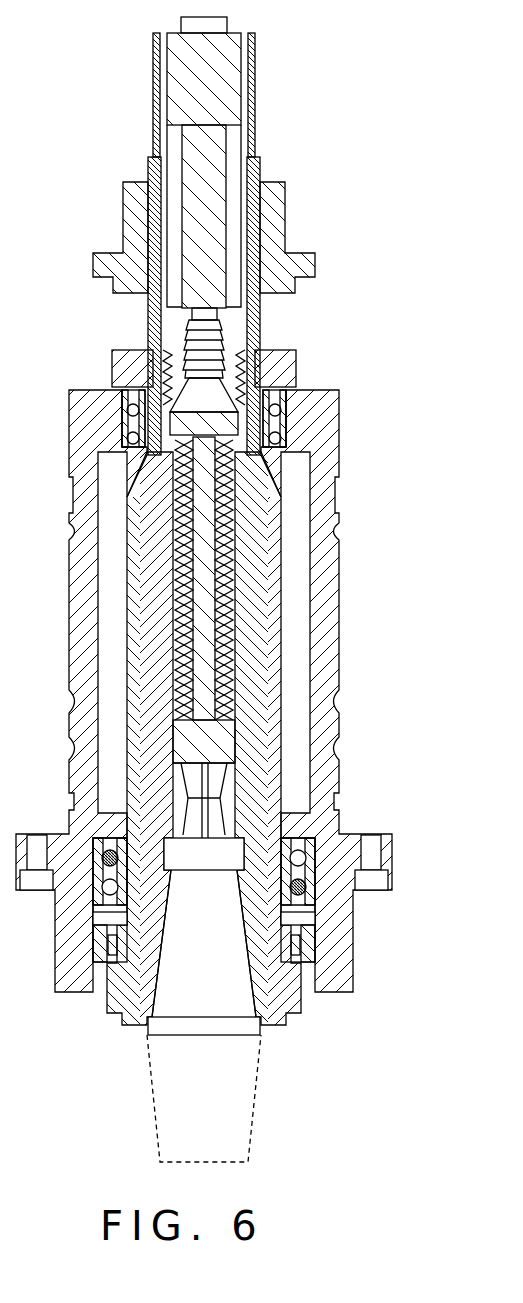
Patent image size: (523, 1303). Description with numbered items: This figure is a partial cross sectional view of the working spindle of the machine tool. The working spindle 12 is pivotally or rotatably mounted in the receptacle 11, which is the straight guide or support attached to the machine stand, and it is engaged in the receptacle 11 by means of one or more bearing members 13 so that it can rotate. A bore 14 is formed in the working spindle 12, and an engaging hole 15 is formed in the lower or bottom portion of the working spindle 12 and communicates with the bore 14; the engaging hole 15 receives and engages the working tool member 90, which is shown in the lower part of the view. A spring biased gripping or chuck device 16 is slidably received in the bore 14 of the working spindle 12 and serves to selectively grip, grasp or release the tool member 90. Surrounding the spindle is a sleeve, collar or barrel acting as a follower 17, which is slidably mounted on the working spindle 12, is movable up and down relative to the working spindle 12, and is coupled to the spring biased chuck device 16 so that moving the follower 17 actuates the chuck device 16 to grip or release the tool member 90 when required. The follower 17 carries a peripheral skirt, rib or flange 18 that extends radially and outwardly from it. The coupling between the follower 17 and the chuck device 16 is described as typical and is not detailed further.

The receptacle 11 is at (323, 440).
The working spindle 12 is at (280, 1022).
The bearing members 13 is at (313, 886).
The bore 14 is at (175, 575).
The engaging hole 15 is at (160, 928).
The spring biased chuck device 16 is at (203, 763).
The follower 17 is at (277, 213).
The flange 18 is at (300, 268).
The tool member 90 is at (210, 1112).